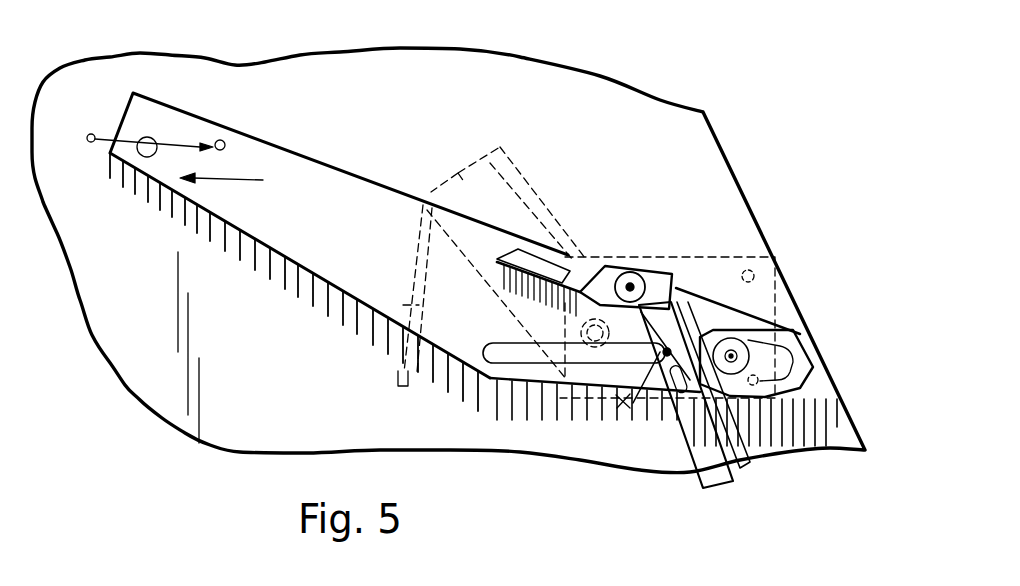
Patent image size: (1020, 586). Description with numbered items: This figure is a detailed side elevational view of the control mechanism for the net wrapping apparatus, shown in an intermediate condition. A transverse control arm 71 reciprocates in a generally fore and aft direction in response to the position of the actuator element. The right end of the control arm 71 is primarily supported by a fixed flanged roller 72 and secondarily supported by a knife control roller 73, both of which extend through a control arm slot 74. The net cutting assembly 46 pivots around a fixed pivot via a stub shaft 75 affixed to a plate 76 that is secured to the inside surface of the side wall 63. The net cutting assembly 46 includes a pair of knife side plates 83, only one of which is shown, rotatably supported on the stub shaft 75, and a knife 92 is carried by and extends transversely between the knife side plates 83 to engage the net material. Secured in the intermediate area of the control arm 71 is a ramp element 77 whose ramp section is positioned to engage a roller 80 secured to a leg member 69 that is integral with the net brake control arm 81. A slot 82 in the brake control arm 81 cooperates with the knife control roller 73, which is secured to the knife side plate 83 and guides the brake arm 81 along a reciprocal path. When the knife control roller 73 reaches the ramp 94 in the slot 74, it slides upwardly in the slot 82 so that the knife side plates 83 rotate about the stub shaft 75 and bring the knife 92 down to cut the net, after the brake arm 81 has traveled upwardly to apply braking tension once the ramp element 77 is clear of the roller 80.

The net cutting assembly 46 is at (515, 148).
The side wall 63 is at (365, 99).
The knife side plate 83 is at (447, 188).
The control arm 71 is at (332, 222).
The roller 80 is at (629, 274).
The leg member 69 is at (658, 272).
The plate 76 is at (713, 254).
The ramp 94 is at (722, 327).
The fixed flanged roller 72 is at (770, 331).
The ramp element 77 is at (507, 288).
The stub shaft 75 is at (582, 335).
The control arm slot 74 is at (515, 353).
The knife control roller 73 is at (633, 403).
The knife 92 is at (398, 382).
The slot 82 is at (730, 433).
The net brake control arm 81 is at (710, 468).